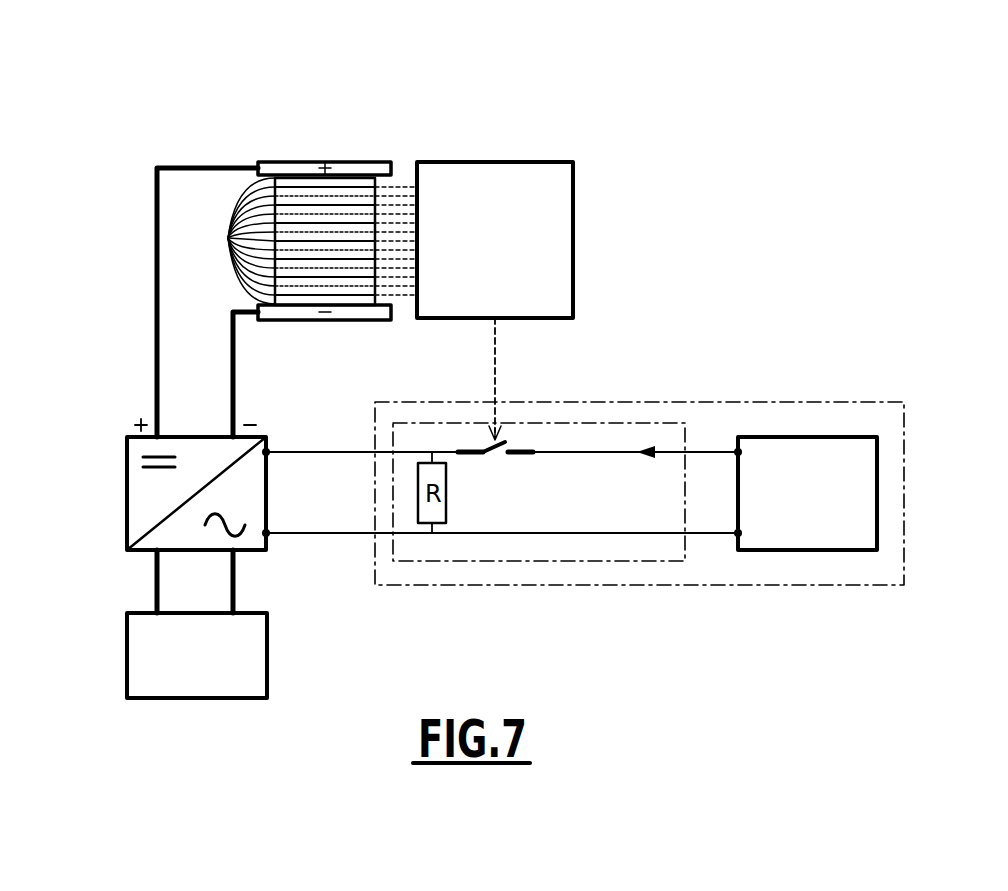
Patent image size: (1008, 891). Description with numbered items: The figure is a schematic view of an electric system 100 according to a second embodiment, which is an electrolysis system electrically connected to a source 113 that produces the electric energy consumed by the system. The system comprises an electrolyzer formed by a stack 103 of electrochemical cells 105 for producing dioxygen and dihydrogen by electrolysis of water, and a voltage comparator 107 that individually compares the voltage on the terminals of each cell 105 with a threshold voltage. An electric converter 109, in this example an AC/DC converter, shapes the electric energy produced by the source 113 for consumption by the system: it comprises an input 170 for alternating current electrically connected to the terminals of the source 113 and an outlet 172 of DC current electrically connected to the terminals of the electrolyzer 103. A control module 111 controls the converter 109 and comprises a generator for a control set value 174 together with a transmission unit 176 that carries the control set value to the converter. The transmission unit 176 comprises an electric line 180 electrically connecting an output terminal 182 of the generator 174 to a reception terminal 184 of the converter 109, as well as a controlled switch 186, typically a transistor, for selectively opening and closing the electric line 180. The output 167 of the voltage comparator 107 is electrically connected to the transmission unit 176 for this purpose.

The electric system 100 is at (158, 109).
The stack of electrochemical cells 103 is at (381, 146).
The electrochemical cell 105 is at (231, 241).
The voltage comparator 107 is at (495, 240).
The electric converter 109 is at (106, 548).
The control module 111 is at (837, 585).
The source 113 is at (197, 655).
The output of the voltage comparator 167 is at (492, 336).
The input for alternating current 170 is at (250, 546).
The outlet of DC current 172 is at (137, 491).
The control set value generator 174 is at (805, 493).
The transmission unit 176 is at (558, 562).
The electric line 180 is at (595, 450).
The output terminal 182 is at (742, 450).
The reception terminal 184 is at (268, 448).
The controlled switch 186 is at (499, 466).